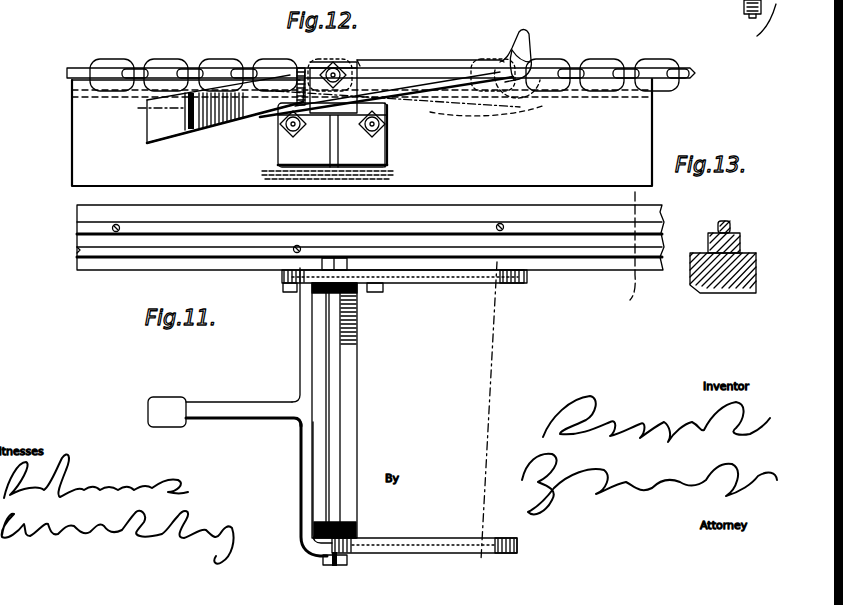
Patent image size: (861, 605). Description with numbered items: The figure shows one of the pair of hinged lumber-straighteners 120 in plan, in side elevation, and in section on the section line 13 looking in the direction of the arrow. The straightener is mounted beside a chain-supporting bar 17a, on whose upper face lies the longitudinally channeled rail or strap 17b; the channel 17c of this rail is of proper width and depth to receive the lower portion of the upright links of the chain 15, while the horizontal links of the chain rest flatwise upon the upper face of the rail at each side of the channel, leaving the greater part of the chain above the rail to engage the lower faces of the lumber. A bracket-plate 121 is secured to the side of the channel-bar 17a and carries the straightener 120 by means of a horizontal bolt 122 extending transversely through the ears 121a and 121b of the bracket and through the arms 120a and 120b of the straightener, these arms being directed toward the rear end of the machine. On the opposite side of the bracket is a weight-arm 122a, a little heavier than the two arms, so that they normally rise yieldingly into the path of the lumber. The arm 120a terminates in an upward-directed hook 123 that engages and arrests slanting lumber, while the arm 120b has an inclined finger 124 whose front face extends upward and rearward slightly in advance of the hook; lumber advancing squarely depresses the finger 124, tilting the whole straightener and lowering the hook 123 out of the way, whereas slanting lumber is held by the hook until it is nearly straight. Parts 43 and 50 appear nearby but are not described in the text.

In FIG. 11, the section line 13 is at (647, 251).
In FIG. 12, the chain 15 is at (168, 63).
In FIG. 12, the chain-supporting bar 17a is at (362, 132).
In FIG. 13, the chain-supporting bar 17a is at (737, 287).
In FIG. 11, the chain-supporting bar 17a is at (353, 252).
In FIG. 12, the channeled rail or strap 17b is at (84, 86).
In FIG. 13, the channeled rail or strap 17b is at (743, 230).
In FIG. 11, the channeled rail or strap 17b is at (137, 255).
In FIG. 12, the channel 17c is at (576, 92).
In FIG. 13, the channel 17c is at (707, 233).
In FIG. 11, the channel 17c is at (78, 243).
In FIG. 12, the bolt 43 is at (741, 13).
In FIG. 12, the link 50 is at (755, 31).
In FIG. 12, the hinged straightener 120 is at (303, 128).
In FIG. 11, the hinged straightener 120 is at (302, 319).
In FIG. 11, the arm 120a is at (467, 284).
In FIG. 12, the arm 120b is at (427, 63).
In FIG. 11, the arm 120b is at (438, 542).
In FIG. 12, the bracket-plate 121 is at (373, 155).
In FIG. 11, the bracket-plate 121 is at (348, 391).
In FIG. 11, the ear 121a is at (357, 297).
In FIG. 12, the ear 121b is at (357, 62).
In FIG. 11, the ear 121b is at (355, 527).
In FIG. 12, the horizontal bolt 122 is at (316, 62).
In FIG. 11, the horizontal bolt 122 is at (323, 560).
In FIG. 12, the weight-arm 122a is at (234, 116).
In FIG. 11, the weight-arm 122a is at (197, 411).
In FIG. 12, the hook 123 is at (522, 44).
In FIG. 11, the hook 123 is at (511, 284).
In FIG. 12, the inclined finger 124 is at (512, 36).
In FIG. 11, the inclined finger 124 is at (533, 531).